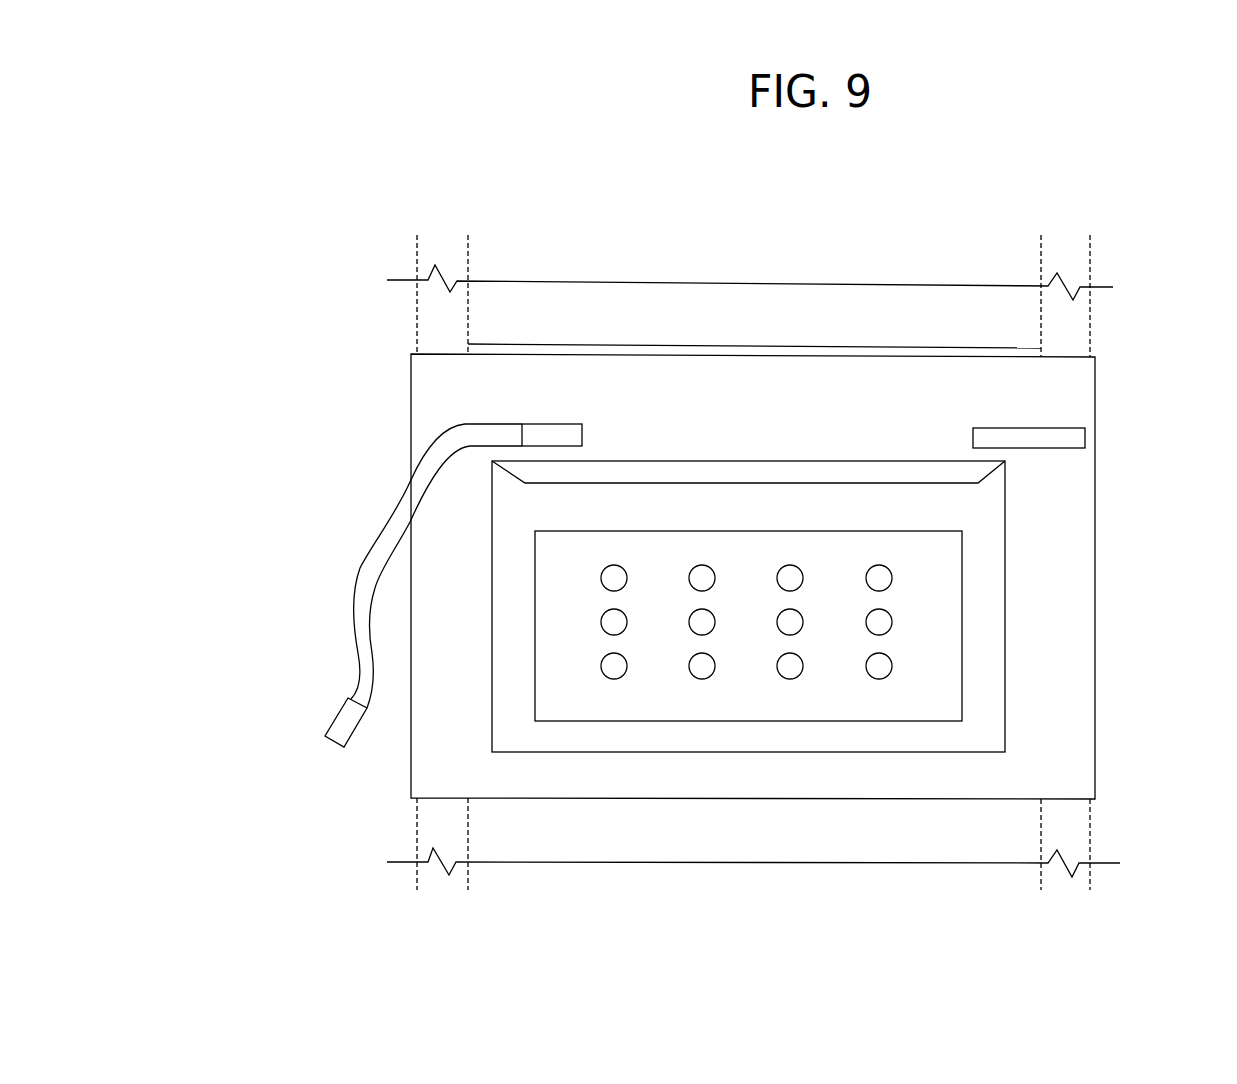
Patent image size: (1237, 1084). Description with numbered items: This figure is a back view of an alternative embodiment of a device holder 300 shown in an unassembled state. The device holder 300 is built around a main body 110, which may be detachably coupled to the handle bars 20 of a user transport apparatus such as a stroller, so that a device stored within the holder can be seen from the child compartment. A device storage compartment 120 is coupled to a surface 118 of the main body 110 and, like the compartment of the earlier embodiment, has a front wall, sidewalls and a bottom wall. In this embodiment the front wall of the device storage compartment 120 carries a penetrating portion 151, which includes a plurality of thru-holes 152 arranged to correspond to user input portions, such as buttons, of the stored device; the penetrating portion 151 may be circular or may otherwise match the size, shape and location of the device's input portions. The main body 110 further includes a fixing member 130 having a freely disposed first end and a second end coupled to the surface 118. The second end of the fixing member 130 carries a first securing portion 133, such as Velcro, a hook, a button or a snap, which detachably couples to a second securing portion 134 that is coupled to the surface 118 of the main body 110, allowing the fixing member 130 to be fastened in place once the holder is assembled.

The device holder 300 is at (340, 279).
The handle bars 20 is at (1087, 308).
The main body 110 is at (1092, 585).
The surface 118 is at (1073, 664).
The second securing portion 134 is at (1075, 438).
The fixing member 130 is at (360, 568).
The first securing portion 133 is at (337, 722).
The device storage compartment 120 is at (1022, 510).
The penetrating portion 151 is at (913, 584).
The thru-holes 152 is at (879, 672).